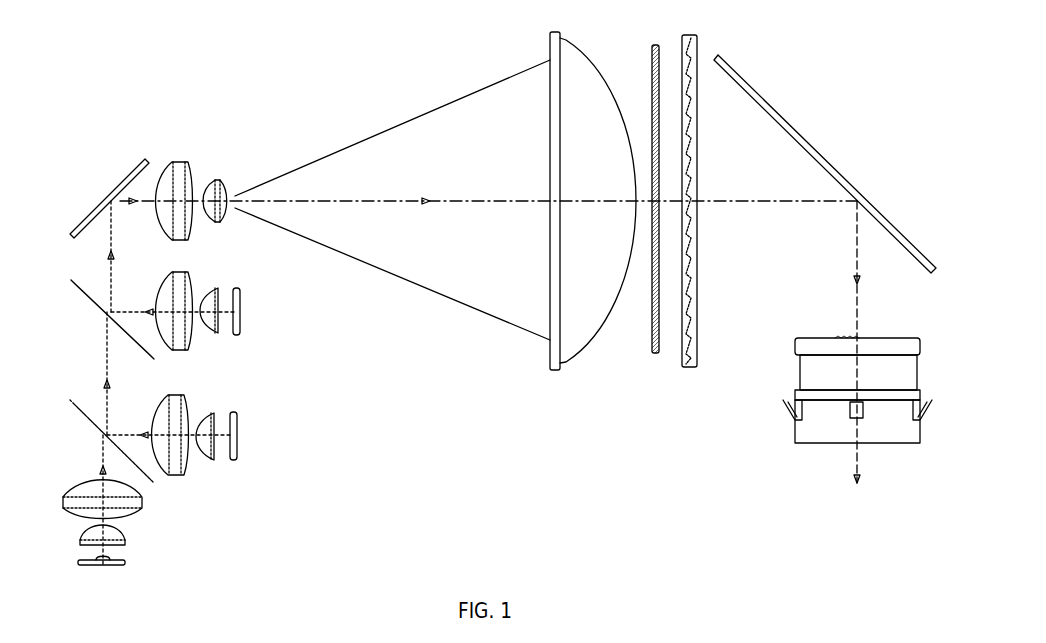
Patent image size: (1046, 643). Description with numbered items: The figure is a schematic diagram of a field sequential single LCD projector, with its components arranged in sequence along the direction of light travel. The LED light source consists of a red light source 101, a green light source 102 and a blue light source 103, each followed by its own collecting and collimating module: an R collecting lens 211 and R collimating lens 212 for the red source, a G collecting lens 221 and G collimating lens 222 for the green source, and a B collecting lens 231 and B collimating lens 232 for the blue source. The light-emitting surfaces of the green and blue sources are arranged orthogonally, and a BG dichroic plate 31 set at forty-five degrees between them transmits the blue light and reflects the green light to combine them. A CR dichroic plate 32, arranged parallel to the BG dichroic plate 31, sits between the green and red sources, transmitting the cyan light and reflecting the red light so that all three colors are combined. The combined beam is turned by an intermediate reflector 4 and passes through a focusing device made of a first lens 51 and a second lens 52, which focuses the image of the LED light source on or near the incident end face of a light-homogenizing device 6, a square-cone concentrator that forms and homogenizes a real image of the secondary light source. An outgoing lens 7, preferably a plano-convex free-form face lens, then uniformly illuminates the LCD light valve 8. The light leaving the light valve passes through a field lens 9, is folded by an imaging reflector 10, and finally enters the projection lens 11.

The intermediate reflector 4 is at (83, 223).
The first lens 51 is at (178, 165).
The second lens 52 is at (215, 181).
The red light source 101 is at (238, 300).
The green light source 102 is at (235, 422).
The blue light source 103 is at (126, 562).
The R collecting lens 211 is at (210, 327).
The R collimating lens 212 is at (180, 343).
The G collecting lens 221 is at (212, 452).
The G collimating lens 222 is at (178, 468).
The B collecting lens 231 is at (121, 535).
The B collimating lens 232 is at (141, 505).
The BG dichroic plate 31 is at (150, 480).
The CR dichroic plate 32 is at (151, 358).
The light-homogenizing device 6 is at (495, 298).
The outgoing lens 7 is at (577, 351).
The LCD light valve 8 is at (655, 354).
The field lens 9 is at (693, 364).
The imaging reflector 10 is at (810, 150).
The projection lens 11 is at (805, 433).